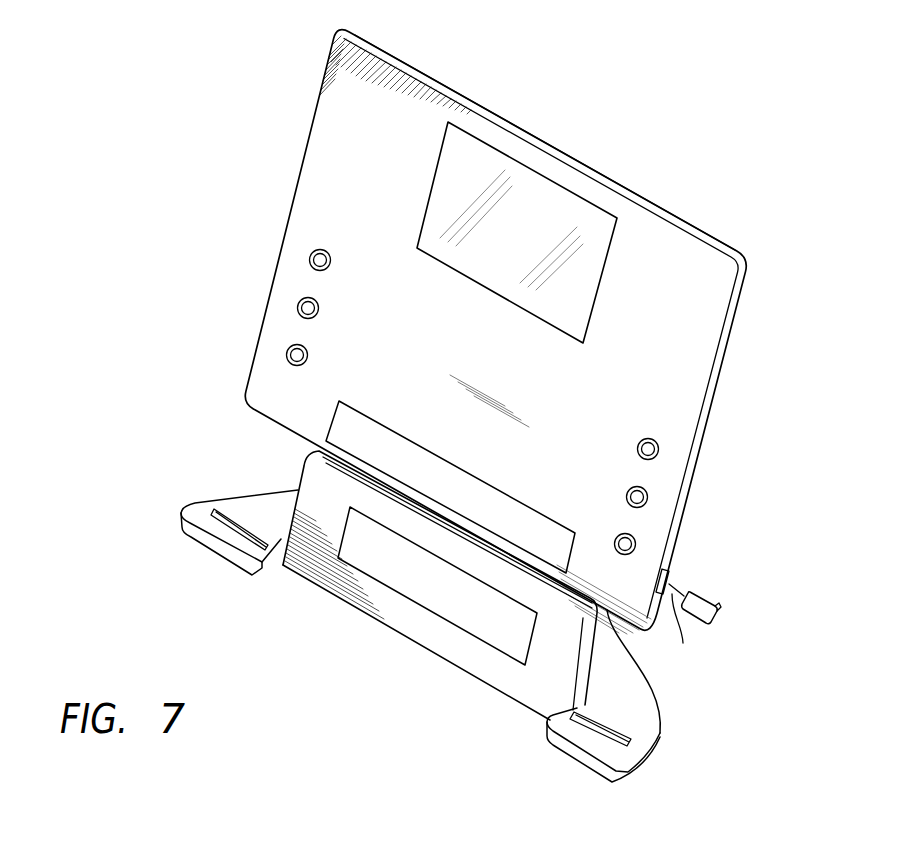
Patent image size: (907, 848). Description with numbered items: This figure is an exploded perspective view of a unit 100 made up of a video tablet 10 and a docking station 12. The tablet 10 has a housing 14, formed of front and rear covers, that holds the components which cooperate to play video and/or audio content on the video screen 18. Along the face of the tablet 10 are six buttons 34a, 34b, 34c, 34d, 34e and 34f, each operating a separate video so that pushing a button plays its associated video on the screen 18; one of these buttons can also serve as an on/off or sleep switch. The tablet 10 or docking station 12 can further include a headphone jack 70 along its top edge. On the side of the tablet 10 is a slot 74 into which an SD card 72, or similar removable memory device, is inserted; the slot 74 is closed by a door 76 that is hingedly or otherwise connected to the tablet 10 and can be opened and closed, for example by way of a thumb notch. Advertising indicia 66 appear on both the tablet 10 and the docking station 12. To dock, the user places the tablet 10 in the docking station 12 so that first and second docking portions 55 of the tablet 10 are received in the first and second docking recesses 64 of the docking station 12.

The unit 100 is at (196, 100).
The video tablet 10 is at (842, 265).
The docking station 12 is at (755, 675).
The housing 14 is at (698, 229).
The video screen 18 is at (530, 229).
The button 34a is at (320, 260).
The button 34b is at (308, 308).
The button 34c is at (297, 355).
The button 34d is at (648, 449).
The button 34e is at (637, 497).
The button 34f is at (625, 544).
The docking portion 55 is at (278, 425).
The docking recess 64 is at (225, 510).
The advertising indicia 66 is at (355, 430).
The headphone jack 70 is at (390, 53).
The SD card 72 is at (717, 612).
The slot 74 is at (669, 583).
The door 76 is at (684, 631).